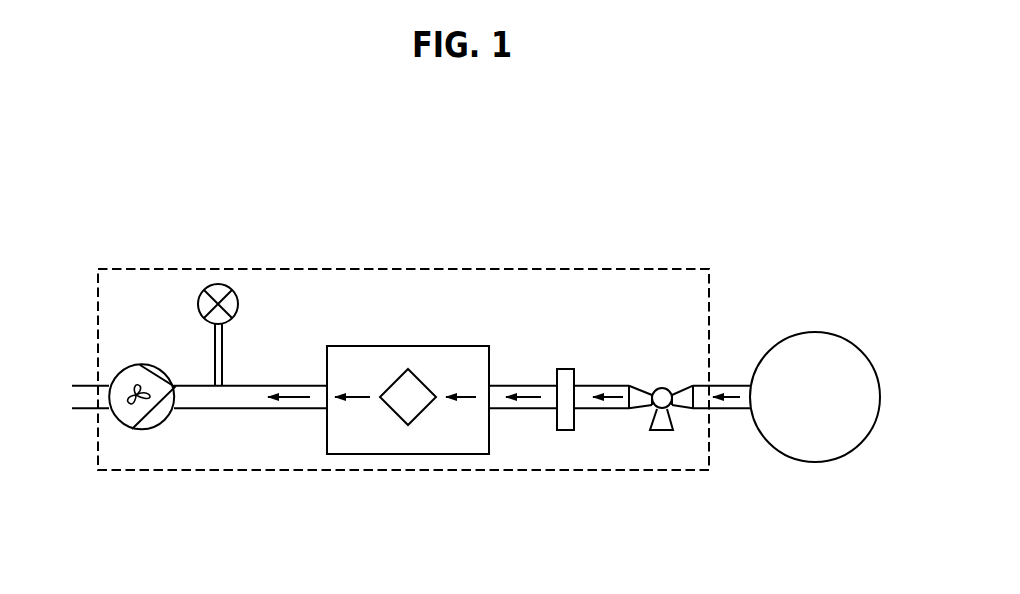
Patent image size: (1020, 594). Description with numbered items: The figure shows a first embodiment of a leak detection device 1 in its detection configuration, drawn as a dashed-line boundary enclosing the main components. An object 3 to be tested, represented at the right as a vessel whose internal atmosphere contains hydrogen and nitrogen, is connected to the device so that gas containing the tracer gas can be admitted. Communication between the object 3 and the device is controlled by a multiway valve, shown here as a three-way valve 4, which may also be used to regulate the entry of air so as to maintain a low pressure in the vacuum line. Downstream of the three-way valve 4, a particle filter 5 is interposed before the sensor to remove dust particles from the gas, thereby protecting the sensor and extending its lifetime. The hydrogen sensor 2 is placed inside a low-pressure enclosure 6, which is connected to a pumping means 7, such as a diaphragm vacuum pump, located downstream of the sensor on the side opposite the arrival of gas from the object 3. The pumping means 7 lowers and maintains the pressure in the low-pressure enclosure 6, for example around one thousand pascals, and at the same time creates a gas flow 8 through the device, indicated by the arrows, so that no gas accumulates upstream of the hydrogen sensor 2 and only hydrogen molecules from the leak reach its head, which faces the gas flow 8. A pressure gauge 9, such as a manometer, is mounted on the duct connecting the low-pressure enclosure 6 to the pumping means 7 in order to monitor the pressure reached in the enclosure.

The leak detection device 1 is at (574, 267).
The hydrogen sensor 2 is at (411, 404).
The object to be tested 3 is at (802, 468).
The three-way valve 4 is at (662, 396).
The particle filter 5 is at (565, 380).
The low-pressure enclosure 6 is at (346, 363).
The pumping means 7 is at (139, 382).
The gas flow 8 is at (290, 399).
The pressure gauge 9 is at (216, 292).